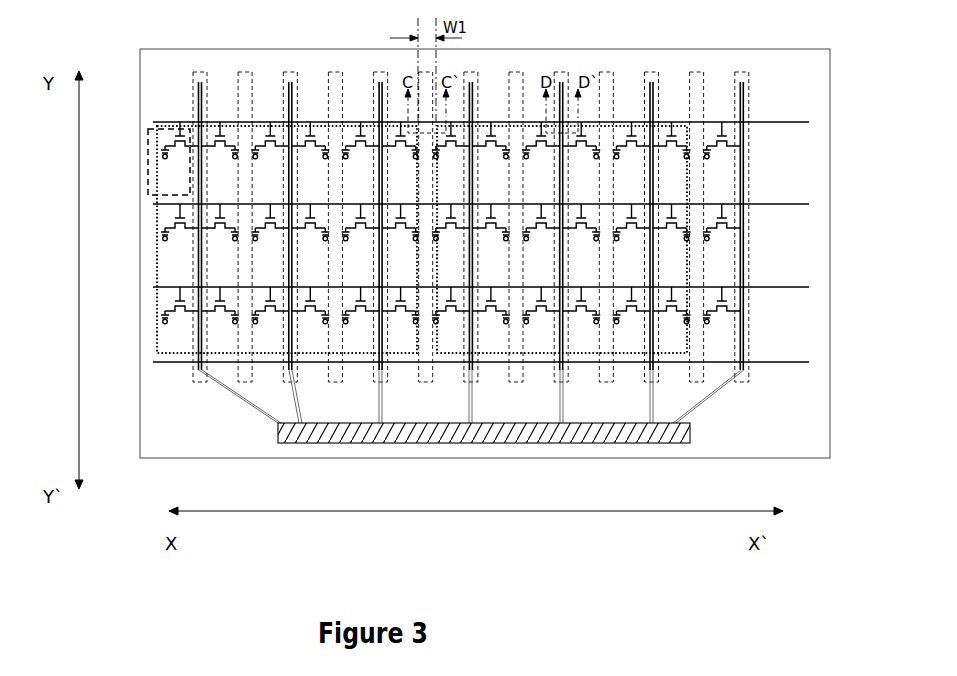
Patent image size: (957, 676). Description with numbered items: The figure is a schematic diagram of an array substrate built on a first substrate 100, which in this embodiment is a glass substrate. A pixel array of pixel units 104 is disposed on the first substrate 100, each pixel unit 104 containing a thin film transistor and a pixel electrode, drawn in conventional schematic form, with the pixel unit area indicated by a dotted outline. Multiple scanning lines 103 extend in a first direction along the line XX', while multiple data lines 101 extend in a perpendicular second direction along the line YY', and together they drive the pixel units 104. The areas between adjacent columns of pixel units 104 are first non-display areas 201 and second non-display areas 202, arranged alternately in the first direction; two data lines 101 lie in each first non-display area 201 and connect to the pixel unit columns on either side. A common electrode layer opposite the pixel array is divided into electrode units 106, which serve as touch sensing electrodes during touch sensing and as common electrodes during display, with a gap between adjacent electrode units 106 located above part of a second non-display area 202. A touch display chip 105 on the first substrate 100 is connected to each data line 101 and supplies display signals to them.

The first substrate 100 is at (793, 320).
The data line 101 is at (198, 97).
The scanning line 103 is at (800, 123).
The pixel unit 104 is at (152, 163).
The touch display chip 105 is at (578, 443).
The electrode unit 106 is at (687, 187).
The first non-display area 201 is at (286, 72).
The second non-display area 202 is at (332, 72).